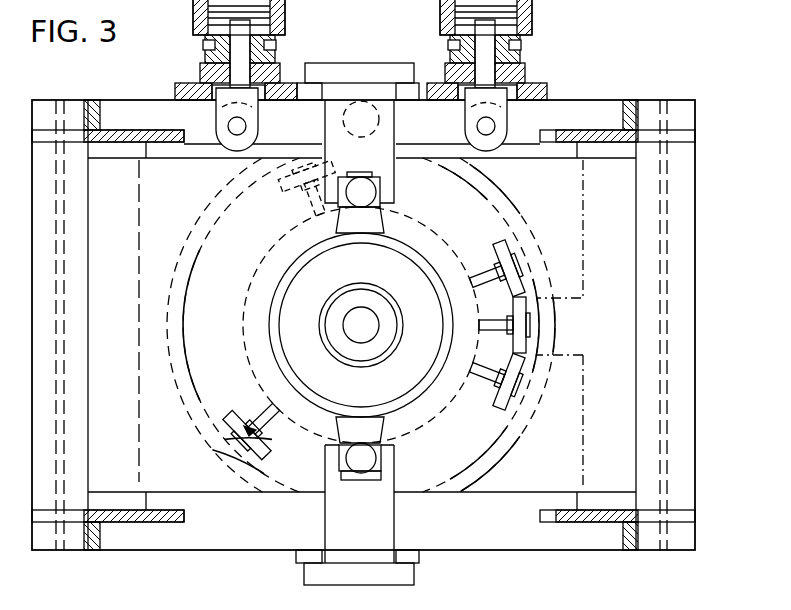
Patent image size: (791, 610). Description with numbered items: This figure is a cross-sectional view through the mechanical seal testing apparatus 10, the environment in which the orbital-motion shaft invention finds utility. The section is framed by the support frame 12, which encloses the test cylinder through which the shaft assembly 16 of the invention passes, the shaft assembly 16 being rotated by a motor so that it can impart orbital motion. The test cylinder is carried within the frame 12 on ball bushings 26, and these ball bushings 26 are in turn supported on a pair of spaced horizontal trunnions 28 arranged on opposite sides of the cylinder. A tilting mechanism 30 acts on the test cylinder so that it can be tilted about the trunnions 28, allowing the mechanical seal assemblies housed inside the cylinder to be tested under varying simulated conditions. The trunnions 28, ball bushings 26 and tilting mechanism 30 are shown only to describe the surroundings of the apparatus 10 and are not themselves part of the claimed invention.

The mechanical seal testing apparatus 10 is at (608, 63).
The support frame 12 is at (695, 275).
The shaft assembly 16 is at (192, 424).
The ball bushings 26 is at (389, 428).
The horizontal trunnions 28 is at (405, 32).
The tilting mechanism 30 is at (534, 14).